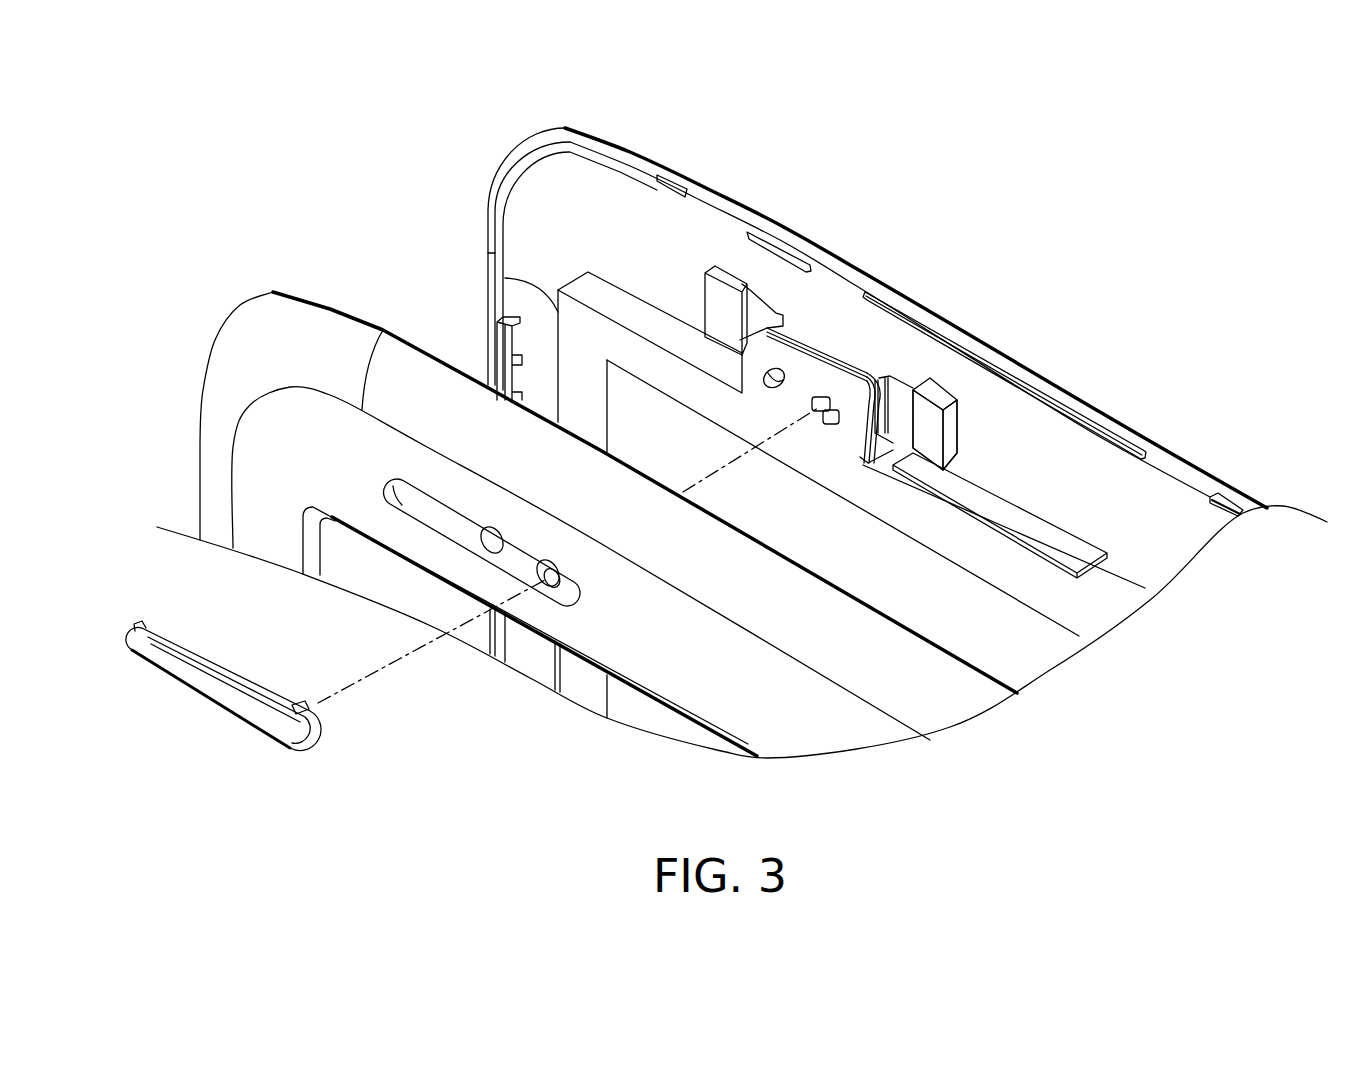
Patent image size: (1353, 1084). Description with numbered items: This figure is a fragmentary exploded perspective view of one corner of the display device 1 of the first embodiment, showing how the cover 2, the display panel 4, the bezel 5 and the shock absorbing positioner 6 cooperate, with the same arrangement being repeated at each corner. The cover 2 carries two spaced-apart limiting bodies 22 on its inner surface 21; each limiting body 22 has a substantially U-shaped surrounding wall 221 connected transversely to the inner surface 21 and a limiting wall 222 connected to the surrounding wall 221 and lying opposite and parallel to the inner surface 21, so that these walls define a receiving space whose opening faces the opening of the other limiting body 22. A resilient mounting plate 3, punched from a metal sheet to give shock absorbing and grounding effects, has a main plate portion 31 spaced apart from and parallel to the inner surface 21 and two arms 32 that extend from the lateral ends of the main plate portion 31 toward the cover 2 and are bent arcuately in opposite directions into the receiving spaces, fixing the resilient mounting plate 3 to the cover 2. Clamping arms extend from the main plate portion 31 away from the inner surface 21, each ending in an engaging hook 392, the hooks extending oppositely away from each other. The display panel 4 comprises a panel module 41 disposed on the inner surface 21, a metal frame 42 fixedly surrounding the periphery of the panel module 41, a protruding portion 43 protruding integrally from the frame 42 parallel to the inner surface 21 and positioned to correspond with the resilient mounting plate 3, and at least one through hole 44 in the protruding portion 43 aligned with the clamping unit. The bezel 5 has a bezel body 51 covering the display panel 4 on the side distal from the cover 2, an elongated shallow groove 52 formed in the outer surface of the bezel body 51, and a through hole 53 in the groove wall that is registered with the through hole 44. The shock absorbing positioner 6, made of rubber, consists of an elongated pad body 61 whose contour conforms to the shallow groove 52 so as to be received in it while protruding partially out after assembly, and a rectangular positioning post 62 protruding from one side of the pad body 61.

The display device 1 is at (1152, 258).
The cover 2 is at (1180, 440).
The inner surface 21 is at (1147, 508).
The limiting body 22 is at (722, 290).
The surrounding wall 221 is at (950, 431).
The limiting wall 222 is at (928, 440).
The resilient mounting plate 3 is at (806, 337).
The main plate portion 31 is at (848, 410).
The arm 32 is at (762, 303).
The engaging hook 392 is at (838, 404).
The display panel 4 is at (565, 268).
The panel module 41 is at (1025, 650).
The frame 42 is at (1087, 613).
The protruding portion 43 is at (757, 357).
The through hole 44 is at (772, 388).
The bezel 5 is at (216, 318).
The bezel body 51 is at (323, 410).
The shallow groove 52 is at (439, 510).
The through hole 53 is at (491, 553).
The shock absorbing positioner 6 is at (192, 725).
The pad body 61 is at (242, 707).
The positioning post 62 is at (308, 708).